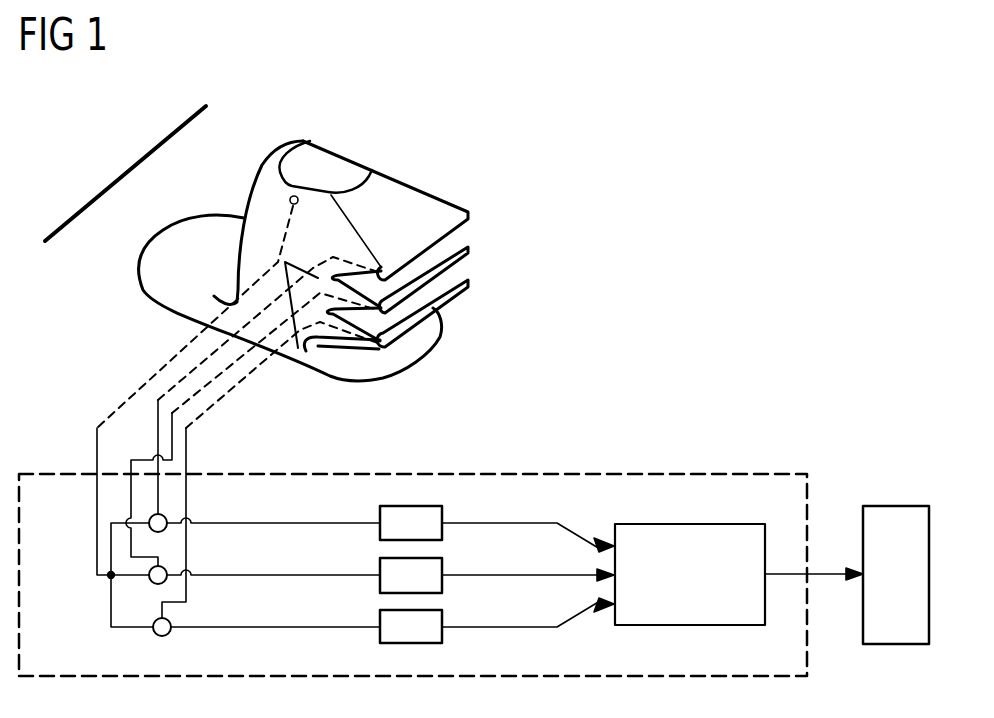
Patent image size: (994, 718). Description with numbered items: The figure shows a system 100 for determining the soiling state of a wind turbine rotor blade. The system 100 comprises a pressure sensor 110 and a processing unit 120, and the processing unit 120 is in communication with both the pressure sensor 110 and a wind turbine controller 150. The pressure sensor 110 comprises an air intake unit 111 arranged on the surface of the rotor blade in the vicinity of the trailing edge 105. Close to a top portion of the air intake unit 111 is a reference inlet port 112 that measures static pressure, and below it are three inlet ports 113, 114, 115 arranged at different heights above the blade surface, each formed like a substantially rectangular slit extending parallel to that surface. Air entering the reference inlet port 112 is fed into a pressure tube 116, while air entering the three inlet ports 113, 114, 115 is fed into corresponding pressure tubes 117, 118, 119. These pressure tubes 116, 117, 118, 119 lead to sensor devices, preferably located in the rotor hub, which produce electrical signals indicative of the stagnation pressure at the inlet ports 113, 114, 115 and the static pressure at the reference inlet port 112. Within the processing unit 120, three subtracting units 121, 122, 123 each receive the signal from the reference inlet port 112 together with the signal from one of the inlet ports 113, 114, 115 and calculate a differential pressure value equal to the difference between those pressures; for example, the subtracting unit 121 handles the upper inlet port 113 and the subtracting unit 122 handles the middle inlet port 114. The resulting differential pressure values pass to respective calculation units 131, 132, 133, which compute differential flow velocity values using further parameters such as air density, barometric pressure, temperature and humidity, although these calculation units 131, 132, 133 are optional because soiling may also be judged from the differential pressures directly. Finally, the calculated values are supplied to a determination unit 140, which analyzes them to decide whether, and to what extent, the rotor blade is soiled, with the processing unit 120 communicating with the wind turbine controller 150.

The system 100 is at (760, 253).
The trailing edge 105 is at (134, 163).
The pressure sensor 110 is at (372, 137).
The air intake unit 111 is at (267, 154).
The reference inlet port 112 is at (294, 196).
The inlet port 113 is at (470, 213).
The inlet port 114 is at (470, 250).
The inlet port 115 is at (470, 283).
The pressure tube 116 is at (125, 405).
The pressure tube 117 is at (203, 365).
The pressure tube 118 is at (202, 391).
The pressure tube 119 is at (250, 378).
The processing unit 120 is at (757, 473).
The subtracting unit 121 is at (166, 517).
The subtracting unit 122 is at (166, 569).
The subtracting unit 123 is at (152, 636).
The calculation unit 131 is at (377, 528).
The calculation unit 132 is at (377, 580).
The calculation unit 133 is at (377, 632).
The determination unit 140 is at (690, 626).
The wind turbine controller 150 is at (897, 504).